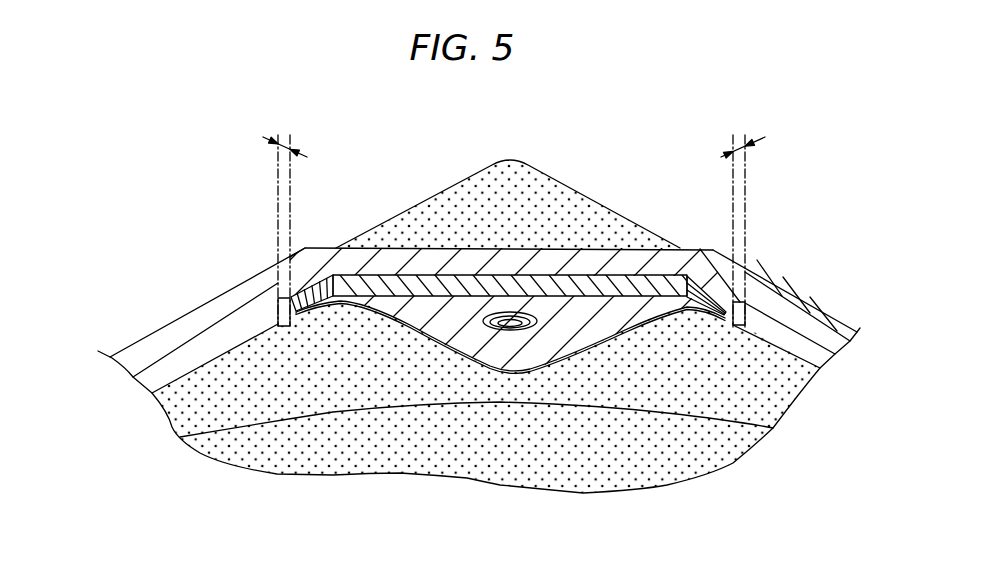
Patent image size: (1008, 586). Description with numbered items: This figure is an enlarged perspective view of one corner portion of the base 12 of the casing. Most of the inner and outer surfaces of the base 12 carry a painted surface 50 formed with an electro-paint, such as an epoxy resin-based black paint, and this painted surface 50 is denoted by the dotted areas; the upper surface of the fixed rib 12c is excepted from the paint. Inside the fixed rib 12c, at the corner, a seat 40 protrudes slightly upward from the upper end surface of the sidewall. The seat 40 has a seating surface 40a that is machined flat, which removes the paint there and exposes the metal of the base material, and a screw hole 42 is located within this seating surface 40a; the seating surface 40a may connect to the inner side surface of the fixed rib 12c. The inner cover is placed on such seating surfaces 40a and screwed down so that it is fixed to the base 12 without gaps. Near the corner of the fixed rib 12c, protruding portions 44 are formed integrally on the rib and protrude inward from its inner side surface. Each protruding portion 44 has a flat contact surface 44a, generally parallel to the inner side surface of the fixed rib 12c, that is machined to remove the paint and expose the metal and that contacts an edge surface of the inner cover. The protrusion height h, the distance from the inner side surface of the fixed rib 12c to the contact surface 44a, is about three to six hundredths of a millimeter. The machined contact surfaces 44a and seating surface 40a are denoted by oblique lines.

The base 12 is at (586, 208).
The fixed rib 12c is at (200, 318).
The seat 40 is at (572, 360).
The seating surface 40a is at (423, 310).
The screw hole 42 is at (507, 320).
The protruding portion 44 is at (298, 314).
The contact surface 44a is at (322, 283).
The painted surface 50 is at (188, 408).
The protrusion height h is at (513, 134).